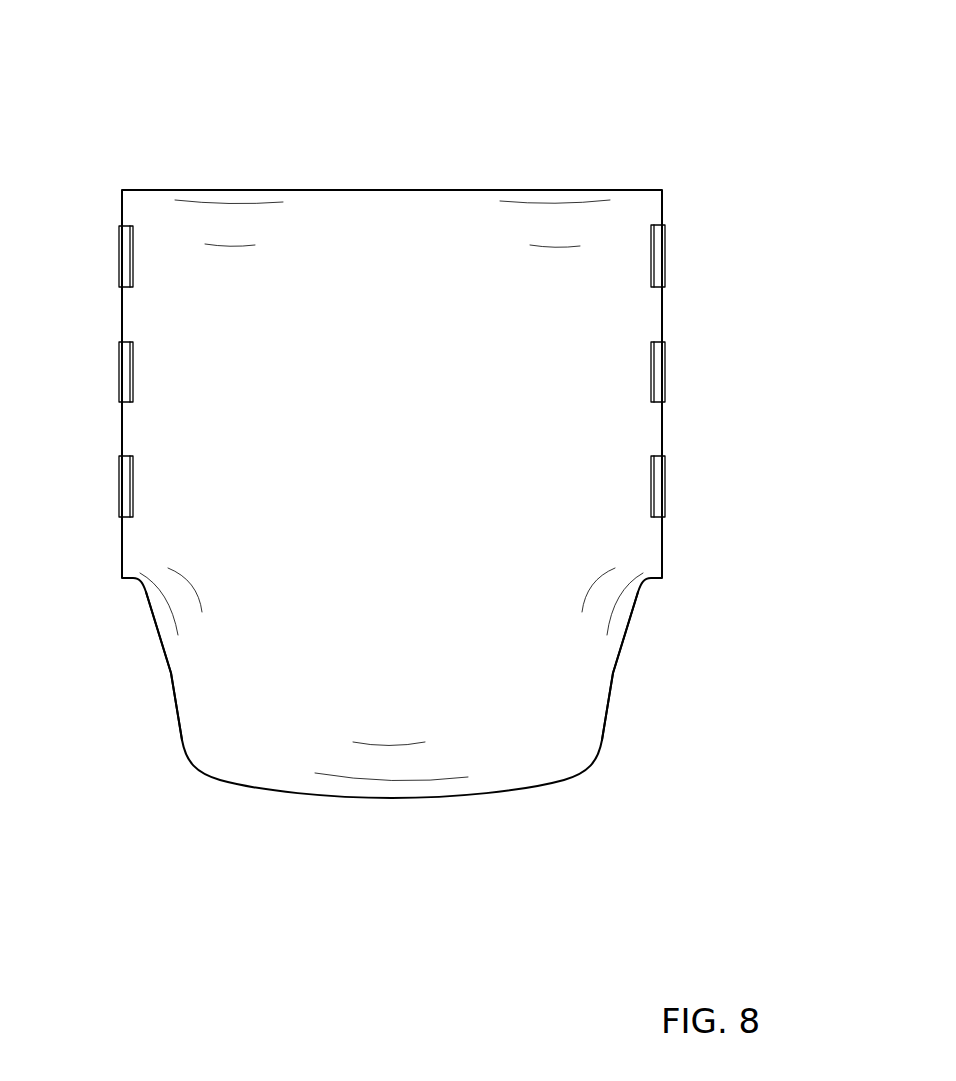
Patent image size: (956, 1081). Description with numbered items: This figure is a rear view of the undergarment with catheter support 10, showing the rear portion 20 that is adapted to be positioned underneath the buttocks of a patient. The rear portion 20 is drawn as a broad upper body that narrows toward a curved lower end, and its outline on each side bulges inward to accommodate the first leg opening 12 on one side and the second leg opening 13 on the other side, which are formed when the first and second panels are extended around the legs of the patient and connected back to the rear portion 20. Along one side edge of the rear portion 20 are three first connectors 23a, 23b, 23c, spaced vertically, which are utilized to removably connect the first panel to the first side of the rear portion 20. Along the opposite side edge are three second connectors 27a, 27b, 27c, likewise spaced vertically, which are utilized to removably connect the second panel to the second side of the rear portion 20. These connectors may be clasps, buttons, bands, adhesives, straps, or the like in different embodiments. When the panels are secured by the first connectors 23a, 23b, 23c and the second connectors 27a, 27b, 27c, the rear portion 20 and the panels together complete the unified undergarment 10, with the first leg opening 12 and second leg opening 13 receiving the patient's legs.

The undergarment with catheter support 10 is at (386, 400).
The rear portion 20 is at (335, 287).
The first leg opening 12 is at (613, 672).
The second leg opening 13 is at (170, 675).
The first connector 23a is at (661, 252).
The first connector 23b is at (661, 370).
The first connector 23c is at (661, 488).
The second connector 27a is at (123, 251).
The second connector 27b is at (124, 370).
The second connector 27c is at (124, 486).